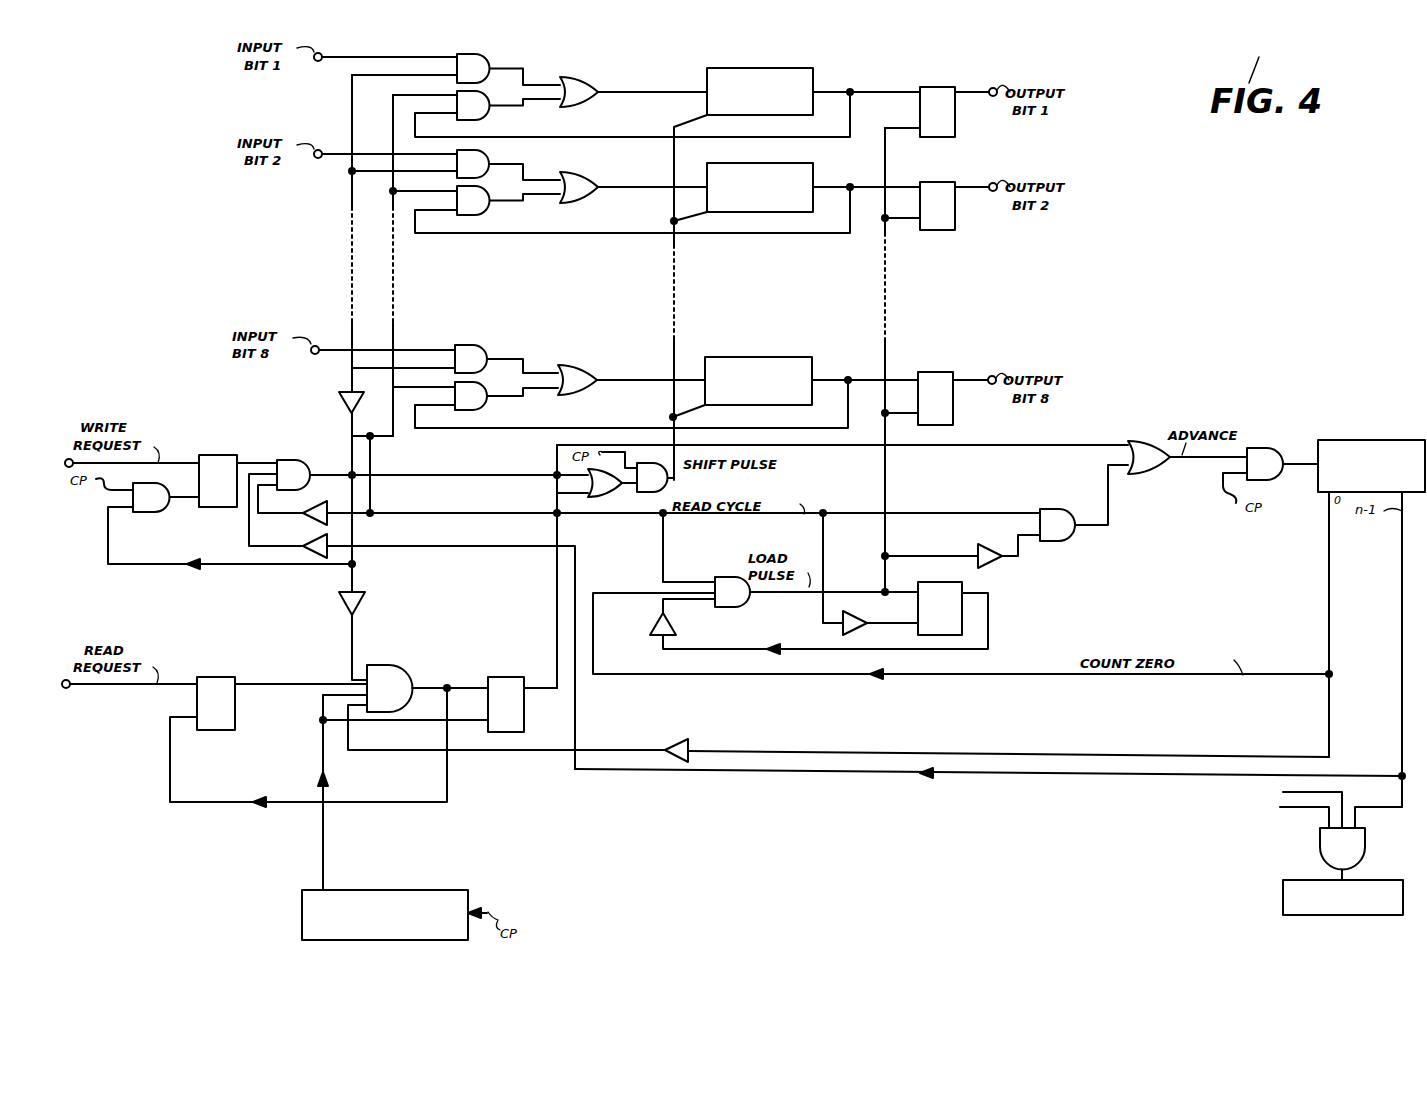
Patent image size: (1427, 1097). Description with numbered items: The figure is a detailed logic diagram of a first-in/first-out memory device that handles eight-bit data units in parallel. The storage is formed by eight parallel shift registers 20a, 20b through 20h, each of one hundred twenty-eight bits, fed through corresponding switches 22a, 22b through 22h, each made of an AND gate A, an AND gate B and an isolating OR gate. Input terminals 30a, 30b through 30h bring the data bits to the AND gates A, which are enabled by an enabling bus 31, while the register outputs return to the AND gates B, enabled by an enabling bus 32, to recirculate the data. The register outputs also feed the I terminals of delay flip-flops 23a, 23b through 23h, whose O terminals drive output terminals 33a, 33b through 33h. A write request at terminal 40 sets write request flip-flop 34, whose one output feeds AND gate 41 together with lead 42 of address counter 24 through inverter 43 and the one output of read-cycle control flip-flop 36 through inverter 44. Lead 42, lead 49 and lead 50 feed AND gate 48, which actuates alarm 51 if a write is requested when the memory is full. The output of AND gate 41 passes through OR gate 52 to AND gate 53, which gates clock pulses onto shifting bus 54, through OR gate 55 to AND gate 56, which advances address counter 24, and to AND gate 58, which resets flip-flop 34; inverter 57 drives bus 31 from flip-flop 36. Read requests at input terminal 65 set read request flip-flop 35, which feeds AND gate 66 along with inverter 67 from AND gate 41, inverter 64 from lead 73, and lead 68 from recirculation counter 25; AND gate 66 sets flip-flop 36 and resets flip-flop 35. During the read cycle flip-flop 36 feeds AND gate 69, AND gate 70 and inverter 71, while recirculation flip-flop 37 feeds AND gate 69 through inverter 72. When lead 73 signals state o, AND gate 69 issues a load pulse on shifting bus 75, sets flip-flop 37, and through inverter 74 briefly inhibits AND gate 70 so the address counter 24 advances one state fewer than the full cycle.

The shift register 20a is at (757, 68).
The shift register 20b is at (740, 163).
The shift register 20h is at (742, 357).
The switch 22a is at (518, 99).
The switch 22b is at (518, 193).
The switch 22h is at (516, 388).
The delay flip-flop 23a is at (955, 68).
The delay flip-flop 23b is at (924, 182).
The delay flip-flop 23h is at (930, 372).
The address counter 24 is at (1365, 440).
The recirculation counter 25 is at (437, 890).
The input terminal 30a is at (320, 62).
The input terminal 30b is at (320, 159).
The input terminal 30h is at (316, 355).
The enabling bus 31 is at (349, 205).
The enabling bus 32 is at (393, 335).
The output terminal 33a is at (992, 87).
The output terminal 33b is at (992, 182).
The output terminal 33h is at (991, 375).
The write request flip-flop 34 is at (225, 507).
The read request flip-flop 35 is at (226, 730).
The read-cycle control flip-flop 36 is at (524, 718).
The recirculation flip-flop 37 is at (962, 620).
The terminal 40 is at (67, 468).
The AND gate 41 is at (290, 460).
The lead 42 is at (1402, 551).
The inverter 43 is at (320, 558).
The inverter 44 is at (348, 474).
The AND gate 48 is at (1365, 842).
The lead 49 is at (1280, 790).
The lead 50 is at (1303, 810).
The alarm 51 is at (1283, 898).
The OR gate 52 is at (608, 497).
The AND gate 53 is at (665, 486).
The shifting bus 54 is at (674, 242).
The OR gate 55 is at (1148, 473).
The AND gate 56 is at (1265, 448).
The inverter 57 is at (338, 405).
The AND gate 58 is at (150, 512).
The inverter 64 is at (688, 741).
The input terminal 65 is at (67, 689).
The AND gate 66 is at (395, 665).
The inverter 67 is at (363, 603).
The lead 68 is at (323, 840).
The AND gate 69 is at (742, 605).
The AND gate 70 is at (1068, 540).
The inverter 71 is at (856, 611).
The inverter 72 is at (658, 626).
The lead 73 is at (1329, 537).
The inverter 74 is at (993, 563).
The shifting bus 75 is at (885, 365).